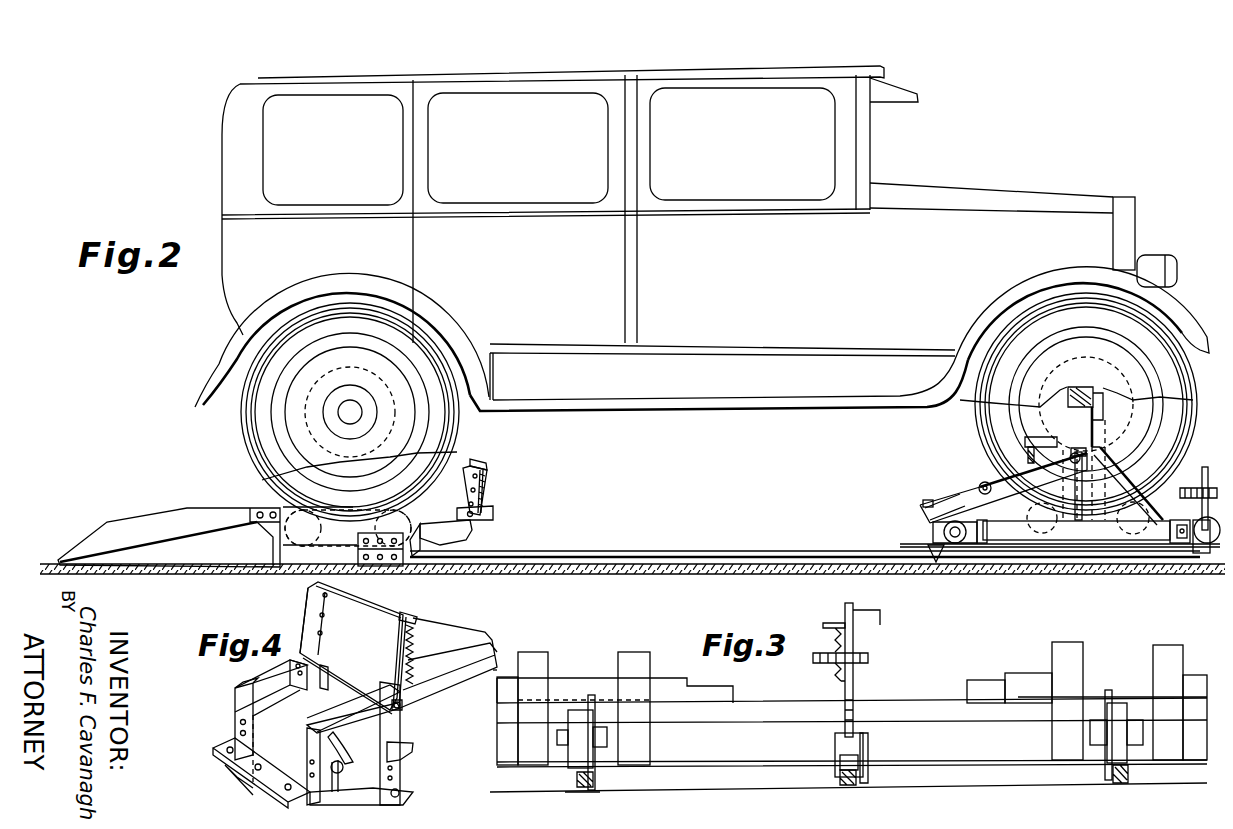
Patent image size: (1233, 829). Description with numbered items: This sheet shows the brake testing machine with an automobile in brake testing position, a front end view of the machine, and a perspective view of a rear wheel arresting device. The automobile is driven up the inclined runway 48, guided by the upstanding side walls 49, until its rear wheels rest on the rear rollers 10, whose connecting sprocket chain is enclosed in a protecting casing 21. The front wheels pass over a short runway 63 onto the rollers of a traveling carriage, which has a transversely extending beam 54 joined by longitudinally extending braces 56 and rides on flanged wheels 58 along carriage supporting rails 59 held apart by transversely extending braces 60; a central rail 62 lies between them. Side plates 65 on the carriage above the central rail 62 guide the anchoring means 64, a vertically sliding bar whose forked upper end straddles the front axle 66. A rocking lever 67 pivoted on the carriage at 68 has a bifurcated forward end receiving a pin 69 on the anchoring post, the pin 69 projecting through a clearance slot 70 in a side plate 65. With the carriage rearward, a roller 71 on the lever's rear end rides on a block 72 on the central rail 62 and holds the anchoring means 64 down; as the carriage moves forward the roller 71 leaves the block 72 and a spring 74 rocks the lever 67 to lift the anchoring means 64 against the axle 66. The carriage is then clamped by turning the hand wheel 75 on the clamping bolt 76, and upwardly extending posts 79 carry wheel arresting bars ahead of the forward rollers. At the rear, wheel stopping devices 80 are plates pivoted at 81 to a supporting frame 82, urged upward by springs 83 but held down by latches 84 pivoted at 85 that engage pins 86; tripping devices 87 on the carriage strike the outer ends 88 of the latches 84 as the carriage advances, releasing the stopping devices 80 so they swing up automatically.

In FIG. 2, the roller 10 is at (320, 535).
In FIG. 2, the protecting casing 21 is at (340, 506).
In FIG. 2, the inclined runway 48 is at (222, 533).
In FIG. 2, the upstanding side wall 49 is at (141, 513).
In FIG. 3, the transversely extending beam 54 is at (912, 735).
In FIG. 4, the longitudinally extending brace 56 is at (497, 748).
In FIG. 3, the longitudinally extending brace 56 is at (1207, 675).
In FIG. 2, the flanged wheel 58 is at (990, 520).
In FIG. 3, the flanged wheel 58 is at (580, 710).
In FIG. 4, the carriage supporting rail 59 is at (466, 634).
In FIG. 3, the carriage supporting rail 59 is at (575, 779).
In FIG. 2, the transversely extending brace 60 is at (690, 566).
In FIG. 2, the central rail 62 is at (642, 550).
In FIG. 3, the central rail 62 is at (868, 772).
In FIG. 2, the short runway 63 is at (493, 512).
In FIG. 2, the anchoring means 64 is at (1095, 422).
In FIG. 3, the anchoring means 64 is at (866, 612).
In FIG. 2, the side plate 65 is at (1120, 472).
In FIG. 2, the front axle 66 is at (1047, 400).
In FIG. 2, the rocking lever 67 is at (957, 493).
In FIG. 2, the pivot 68 is at (984, 481).
In FIG. 2, the pin 69 is at (1103, 452).
In FIG. 2, the clearance slot 70 is at (1084, 490).
In FIG. 2, the roller 71 is at (933, 532).
In FIG. 2, the block 72 is at (371, 533).
In FIG. 2, the spring 74 is at (1024, 447).
In FIG. 3, the spring 74 is at (836, 632).
In FIG. 2, the hand wheel 75 is at (1203, 488).
In FIG. 3, the hand wheel 75 is at (870, 657).
In FIG. 3, the clamping bolt 76 is at (845, 710).
In FIG. 3, the upwardly extending post 79 is at (638, 652).
In FIG. 2, the wheel stopping device 80 is at (468, 480).
In FIG. 4, the wheel stopping device 80 is at (375, 613).
In FIG. 4, the pivot 81 is at (400, 707).
In FIG. 4, the supporting frame 82 is at (235, 715).
In FIG. 2, the spring 83 is at (487, 480).
In FIG. 4, the spring 83 is at (415, 633).
In FIG. 2, the latch 84 is at (472, 528).
In FIG. 4, the latch 84 is at (363, 762).
In FIG. 4, the pivot 85 is at (308, 778).
In FIG. 2, the pin 86 is at (479, 466).
In FIG. 4, the pin 86 is at (416, 617).
In FIG. 2, the tripping device 87 is at (935, 550).
In FIG. 4, the outer end of latch 88 is at (400, 763).